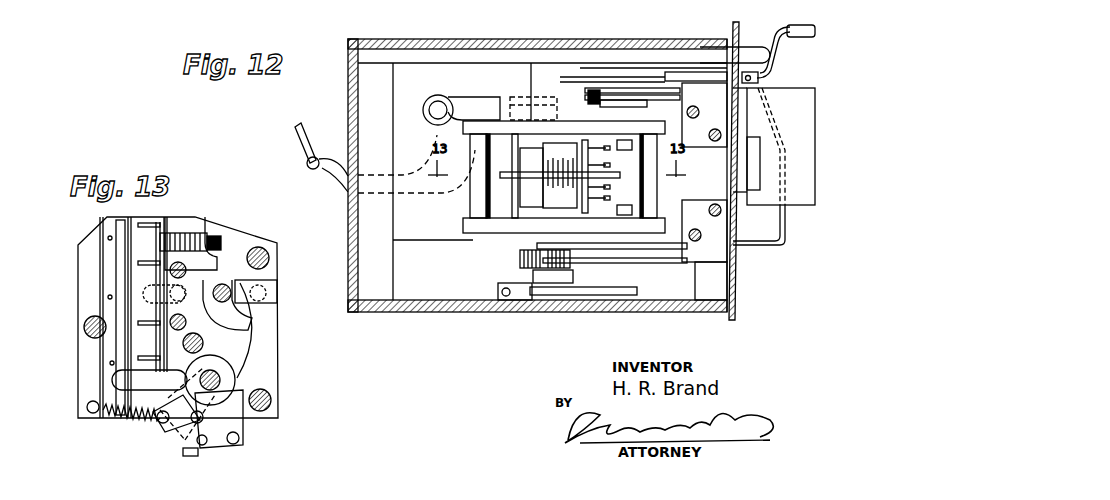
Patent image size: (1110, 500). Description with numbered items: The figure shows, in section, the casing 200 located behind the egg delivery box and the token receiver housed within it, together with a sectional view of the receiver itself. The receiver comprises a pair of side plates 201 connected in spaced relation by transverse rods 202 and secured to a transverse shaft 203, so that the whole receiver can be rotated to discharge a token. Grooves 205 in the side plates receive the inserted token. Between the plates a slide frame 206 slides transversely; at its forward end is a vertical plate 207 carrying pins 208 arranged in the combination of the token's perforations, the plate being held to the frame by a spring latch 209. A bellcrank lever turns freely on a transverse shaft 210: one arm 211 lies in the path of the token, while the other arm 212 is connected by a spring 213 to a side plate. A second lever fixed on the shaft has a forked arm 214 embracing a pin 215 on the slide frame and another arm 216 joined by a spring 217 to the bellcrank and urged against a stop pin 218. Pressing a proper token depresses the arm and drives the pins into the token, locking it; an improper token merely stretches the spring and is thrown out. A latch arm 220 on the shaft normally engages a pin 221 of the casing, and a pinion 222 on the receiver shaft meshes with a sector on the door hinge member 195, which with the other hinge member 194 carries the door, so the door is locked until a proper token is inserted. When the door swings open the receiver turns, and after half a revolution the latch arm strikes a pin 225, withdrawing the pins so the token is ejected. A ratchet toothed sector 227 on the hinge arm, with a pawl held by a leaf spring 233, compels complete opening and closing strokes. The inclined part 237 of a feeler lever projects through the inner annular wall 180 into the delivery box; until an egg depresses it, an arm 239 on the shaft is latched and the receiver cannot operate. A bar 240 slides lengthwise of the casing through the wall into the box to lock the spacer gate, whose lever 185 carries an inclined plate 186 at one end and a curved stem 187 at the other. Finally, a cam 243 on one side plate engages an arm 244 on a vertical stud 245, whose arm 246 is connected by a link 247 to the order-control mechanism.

In FIG. 12, the inner annular wall 180 is at (739, 283).
In FIG. 12, the lever 185 is at (749, 127).
In FIG. 12, the plate 186 is at (808, 205).
In FIG. 12, the stem 187 is at (797, 27).
In FIG. 12, the hinge member 194 is at (660, 77).
In FIG. 12, the hinge member 195 is at (653, 262).
In FIG. 12, the casing 200 is at (575, 42).
In FIG. 12, the side plates 201 is at (500, 126).
In FIG. 13, the side plates 201 is at (249, 243).
In FIG. 12, the transverse rods 202 is at (473, 193).
In FIG. 13, the transverse rods 202 is at (269, 258).
In FIG. 13, the transverse shaft 203 is at (204, 345).
In FIG. 12, the grooves 205 is at (620, 190).
In FIG. 13, the grooves 205 is at (116, 246).
In FIG. 13, the slide frame 206 is at (272, 310).
In FIG. 13, the vertical plate 207 is at (160, 279).
In FIG. 13, the pins 208 is at (155, 265).
In FIG. 13, the spring latch 209 is at (200, 232).
In FIG. 13, the transverse shaft 210 is at (221, 376).
In FIG. 13, the arm 211 is at (118, 380).
In FIG. 13, the arm 212 is at (244, 427).
In FIG. 13, the spring 213 is at (130, 420).
In FIG. 13, the arm 214 is at (248, 322).
In FIG. 13, the pin 215 is at (278, 284).
In FIG. 13, the arm 216 is at (160, 427).
In FIG. 13, the spring 217 is at (225, 450).
In FIG. 13, the stop pin 218 is at (183, 441).
In FIG. 12, the latch arm 220 is at (637, 97).
In FIG. 12, the pin 221 is at (642, 103).
In FIG. 12, the pinion 222 is at (520, 262).
In FIG. 12, the pin 225 is at (606, 95).
In FIG. 12, the ratchet toothed sector 227 is at (595, 295).
In FIG. 12, the leaf spring 233 is at (526, 300).
In FIG. 12, the part 237 is at (779, 120).
In FIG. 13, the arm 239 is at (190, 456).
In FIG. 12, the bar 240 is at (508, 55).
In FIG. 12, the cam 243 is at (584, 97).
In FIG. 12, the arm 244 is at (469, 97).
In FIG. 12, the vertical stud 245 is at (428, 104).
In FIG. 12, the arm 246 is at (335, 178).
In FIG. 12, the link 247 is at (302, 145).